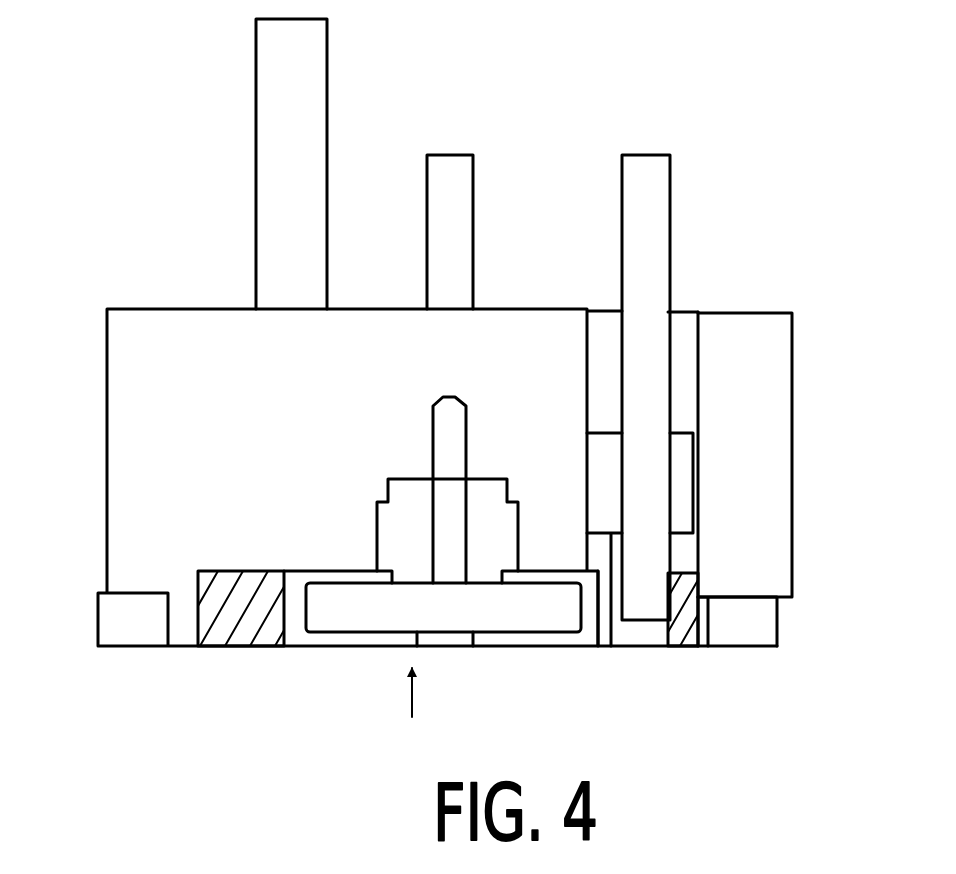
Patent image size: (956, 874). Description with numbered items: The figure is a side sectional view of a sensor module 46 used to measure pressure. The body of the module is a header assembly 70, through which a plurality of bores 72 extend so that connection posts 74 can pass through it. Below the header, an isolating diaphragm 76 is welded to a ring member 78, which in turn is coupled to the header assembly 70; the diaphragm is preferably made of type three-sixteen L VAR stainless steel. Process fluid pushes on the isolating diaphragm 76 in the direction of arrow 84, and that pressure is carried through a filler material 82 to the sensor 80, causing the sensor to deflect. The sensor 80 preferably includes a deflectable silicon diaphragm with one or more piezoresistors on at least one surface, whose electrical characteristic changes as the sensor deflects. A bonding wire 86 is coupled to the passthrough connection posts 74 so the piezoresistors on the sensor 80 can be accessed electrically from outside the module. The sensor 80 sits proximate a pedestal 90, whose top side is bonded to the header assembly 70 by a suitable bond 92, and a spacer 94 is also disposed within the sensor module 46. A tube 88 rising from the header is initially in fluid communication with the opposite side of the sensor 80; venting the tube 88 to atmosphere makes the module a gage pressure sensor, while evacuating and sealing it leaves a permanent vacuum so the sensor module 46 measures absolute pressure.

The sensor module 46 is at (802, 500).
The header assembly 70 is at (106, 403).
The bores 72 is at (683, 311).
The connection posts 74 is at (672, 173).
The isolating diaphragm 76 is at (702, 648).
The ring member 78 is at (778, 622).
The sensor 80 is at (427, 621).
The filler material 82 is at (515, 640).
The arrow 84 is at (408, 693).
The bonding wire 86 is at (580, 645).
The tube 88 is at (256, 189).
The pedestal 90 is at (398, 514).
The bond 92 is at (489, 474).
The spacer 94 is at (234, 614).